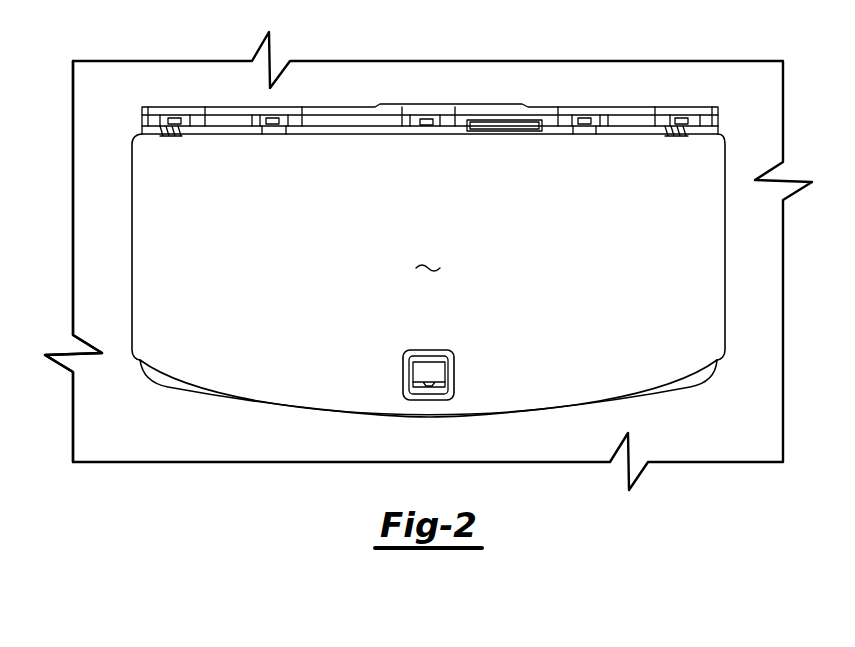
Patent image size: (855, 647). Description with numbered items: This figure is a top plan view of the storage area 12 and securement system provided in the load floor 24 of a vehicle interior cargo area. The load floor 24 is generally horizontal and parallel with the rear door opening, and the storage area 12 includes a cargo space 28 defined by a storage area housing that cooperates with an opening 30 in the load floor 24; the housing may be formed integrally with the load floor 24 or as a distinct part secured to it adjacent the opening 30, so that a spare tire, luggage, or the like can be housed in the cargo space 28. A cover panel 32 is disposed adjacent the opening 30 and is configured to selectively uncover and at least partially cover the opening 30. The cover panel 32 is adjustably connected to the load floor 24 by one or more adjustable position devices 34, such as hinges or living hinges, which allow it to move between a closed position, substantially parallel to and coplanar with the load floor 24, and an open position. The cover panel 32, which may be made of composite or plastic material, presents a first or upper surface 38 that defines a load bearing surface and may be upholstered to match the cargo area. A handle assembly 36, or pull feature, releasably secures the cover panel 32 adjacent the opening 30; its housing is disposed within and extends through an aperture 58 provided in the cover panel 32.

The storage area 12 is at (734, 44).
The load floor 24 is at (72, 293).
The cargo space 28 is at (680, 390).
The opening 30 is at (131, 181).
The cover panel 32 is at (689, 278).
The adjustable position devices 34 is at (173, 106).
The handle assembly 36 is at (438, 352).
The first surface 38 is at (429, 257).
The aperture 58 is at (402, 376).